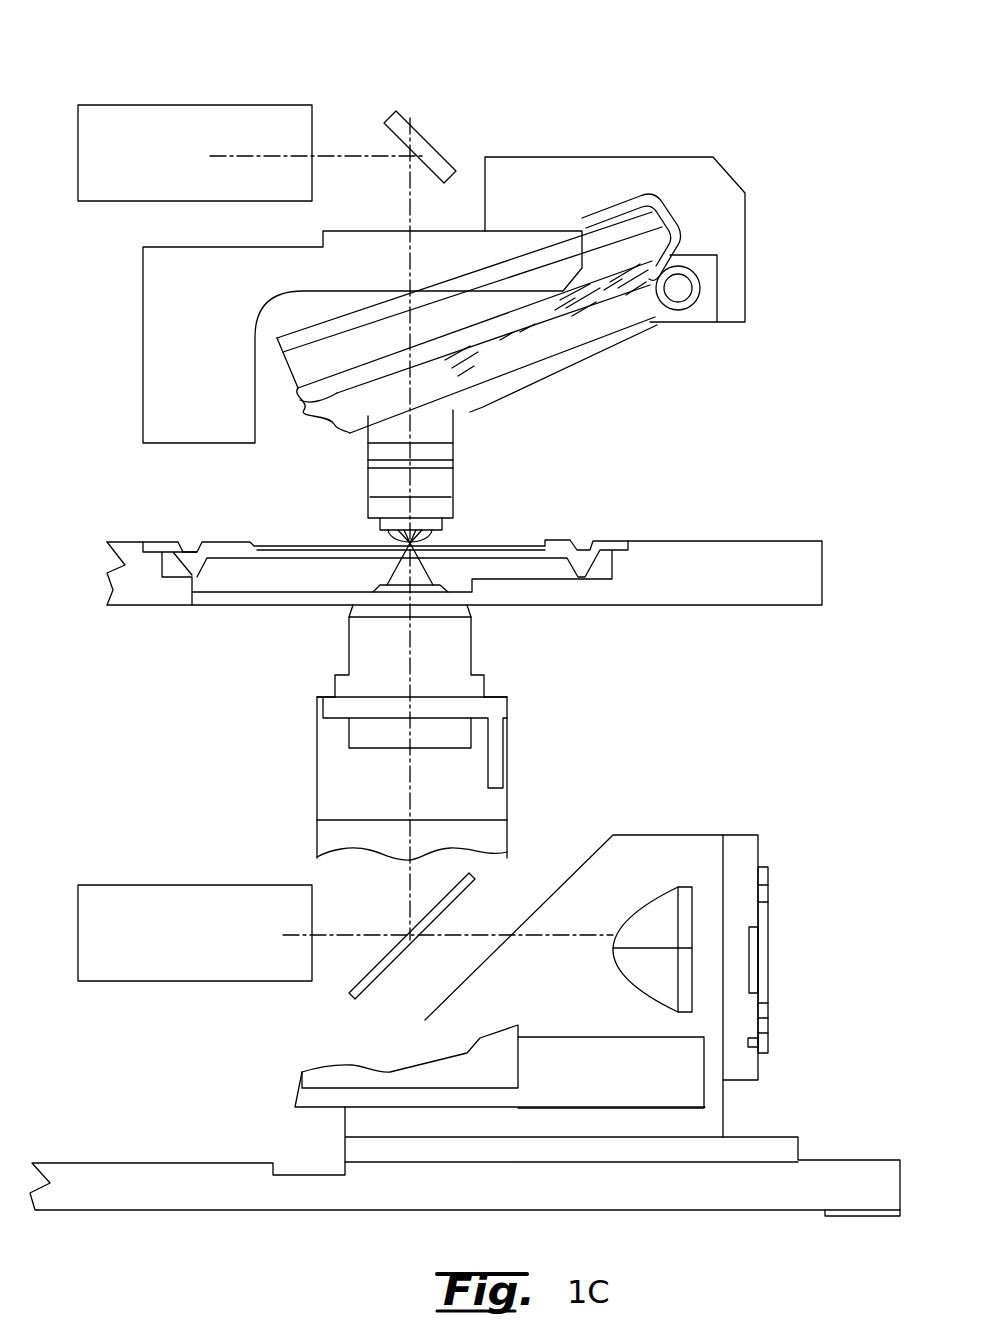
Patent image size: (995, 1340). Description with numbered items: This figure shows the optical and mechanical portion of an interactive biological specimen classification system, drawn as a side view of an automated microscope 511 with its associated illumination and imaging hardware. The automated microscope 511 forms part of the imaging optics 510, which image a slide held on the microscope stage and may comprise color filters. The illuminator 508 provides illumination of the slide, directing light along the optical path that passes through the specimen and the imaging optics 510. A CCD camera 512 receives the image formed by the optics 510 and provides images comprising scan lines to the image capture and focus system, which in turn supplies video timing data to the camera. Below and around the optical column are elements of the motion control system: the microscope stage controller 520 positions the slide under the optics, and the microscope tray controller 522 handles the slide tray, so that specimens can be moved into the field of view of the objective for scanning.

The illuminator 508 is at (241, 885).
The imaging optics 510 is at (342, 496).
The automated microscope 511 is at (760, 151).
The CCD camera 512 is at (242, 105).
The microscope stage controller 520 is at (775, 541).
The microscope tray controller 522 is at (306, 396).